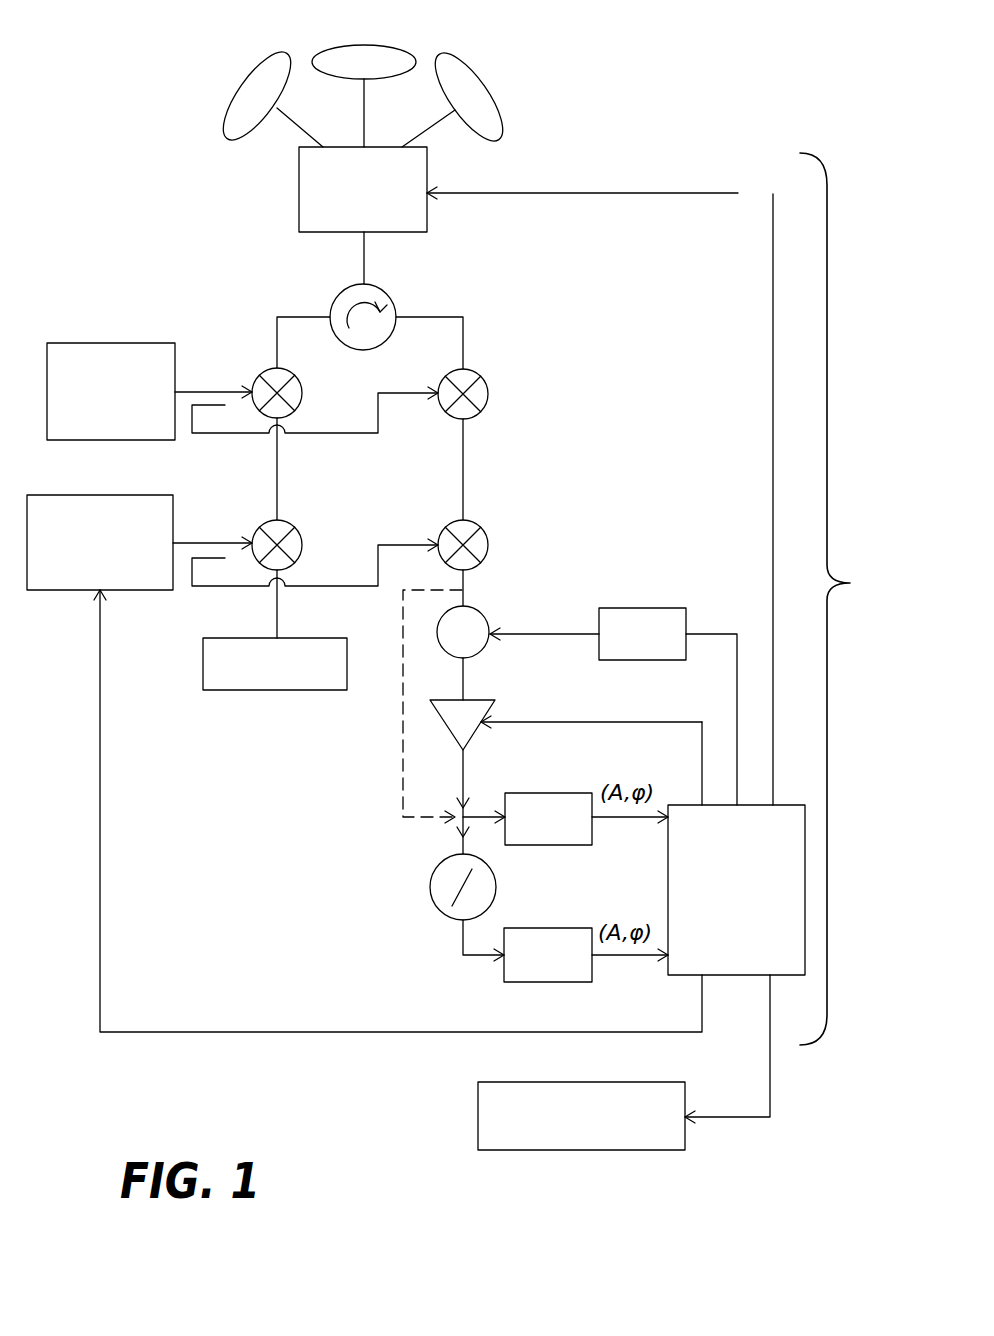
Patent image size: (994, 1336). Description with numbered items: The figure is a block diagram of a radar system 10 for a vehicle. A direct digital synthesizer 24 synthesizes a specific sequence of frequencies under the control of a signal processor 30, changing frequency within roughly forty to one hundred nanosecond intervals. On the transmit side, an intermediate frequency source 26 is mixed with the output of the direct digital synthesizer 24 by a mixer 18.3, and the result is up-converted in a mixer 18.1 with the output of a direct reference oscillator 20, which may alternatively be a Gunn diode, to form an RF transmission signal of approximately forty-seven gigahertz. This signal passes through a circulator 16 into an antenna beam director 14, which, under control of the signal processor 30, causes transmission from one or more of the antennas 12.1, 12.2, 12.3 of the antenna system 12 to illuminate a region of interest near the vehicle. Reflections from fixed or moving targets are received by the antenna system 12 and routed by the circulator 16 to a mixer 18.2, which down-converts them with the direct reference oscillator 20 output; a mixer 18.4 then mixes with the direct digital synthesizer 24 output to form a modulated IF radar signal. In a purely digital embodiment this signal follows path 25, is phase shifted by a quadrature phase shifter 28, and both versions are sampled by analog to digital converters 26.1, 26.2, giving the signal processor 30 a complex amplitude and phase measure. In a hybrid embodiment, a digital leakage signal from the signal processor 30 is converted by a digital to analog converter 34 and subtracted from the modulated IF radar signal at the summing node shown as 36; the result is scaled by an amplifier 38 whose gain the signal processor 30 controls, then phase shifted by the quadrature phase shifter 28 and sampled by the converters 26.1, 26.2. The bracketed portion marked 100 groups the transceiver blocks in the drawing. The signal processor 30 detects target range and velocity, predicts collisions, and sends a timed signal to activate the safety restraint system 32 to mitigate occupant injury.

The radar system 10 is at (585, 94).
The antenna system 12 is at (185, 137).
The antenna 12.1 is at (246, 97).
The antenna 12.2 is at (348, 48).
The antenna 12.3 is at (500, 118).
The antenna beam director 14 is at (300, 205).
The circulator 16 is at (387, 293).
The mixer 18.1 is at (267, 372).
The mixer 18.2 is at (490, 394).
The mixer 18.3 is at (300, 543).
The mixer 18.4 is at (485, 545).
The direct reference oscillator 20 is at (96, 345).
The direct digital synthesizer 24 is at (133, 590).
The path 25 is at (403, 750).
The intermediate frequency source 26 is at (213, 680).
The analog to digital converter 26.1 is at (572, 792).
The analog to digital converter 26.2 is at (514, 983).
The quadrature phase shifter 28 is at (430, 895).
The signal processor 30 is at (730, 976).
The safety restraint system 32 is at (478, 1110).
The digital to analog converter 34 is at (660, 607).
The summer 36 is at (485, 620).
The amplifier 38 is at (480, 700).
The radar transceiver 100 is at (848, 599).